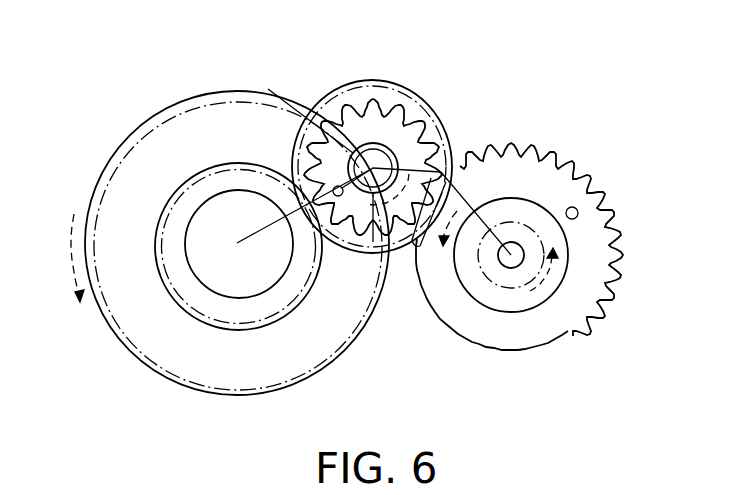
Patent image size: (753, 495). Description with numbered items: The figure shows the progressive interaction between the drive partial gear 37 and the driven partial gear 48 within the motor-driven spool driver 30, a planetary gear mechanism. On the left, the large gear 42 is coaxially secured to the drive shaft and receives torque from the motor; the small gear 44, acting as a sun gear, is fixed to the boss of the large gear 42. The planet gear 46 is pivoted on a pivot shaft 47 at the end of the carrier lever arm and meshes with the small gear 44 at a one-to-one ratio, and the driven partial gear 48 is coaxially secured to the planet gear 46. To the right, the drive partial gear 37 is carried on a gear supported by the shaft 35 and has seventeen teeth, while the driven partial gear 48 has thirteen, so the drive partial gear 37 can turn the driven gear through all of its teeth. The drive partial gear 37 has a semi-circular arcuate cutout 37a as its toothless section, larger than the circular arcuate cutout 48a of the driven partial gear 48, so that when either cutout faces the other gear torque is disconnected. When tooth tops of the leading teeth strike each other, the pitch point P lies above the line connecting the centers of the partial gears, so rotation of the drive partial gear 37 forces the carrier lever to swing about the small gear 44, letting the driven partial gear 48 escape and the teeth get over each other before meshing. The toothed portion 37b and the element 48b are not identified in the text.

The spool driver 30 is at (104, 152).
The large gear 42 is at (106, 326).
The small gear 44 is at (176, 302).
The planet gear 46 is at (423, 96).
The pivot shaft 47 is at (348, 90).
The driven partial gear 48 is at (410, 88).
The circular arcuate cutout 48a is at (380, 259).
The pawl 48b is at (412, 250).
The pitch point P is at (445, 130).
The drive partial gear 37 is at (612, 200).
The semi-circular arcuate cutout 37a is at (457, 334).
The toothed portion link 37b is at (443, 170).
The shaft 35 is at (508, 268).